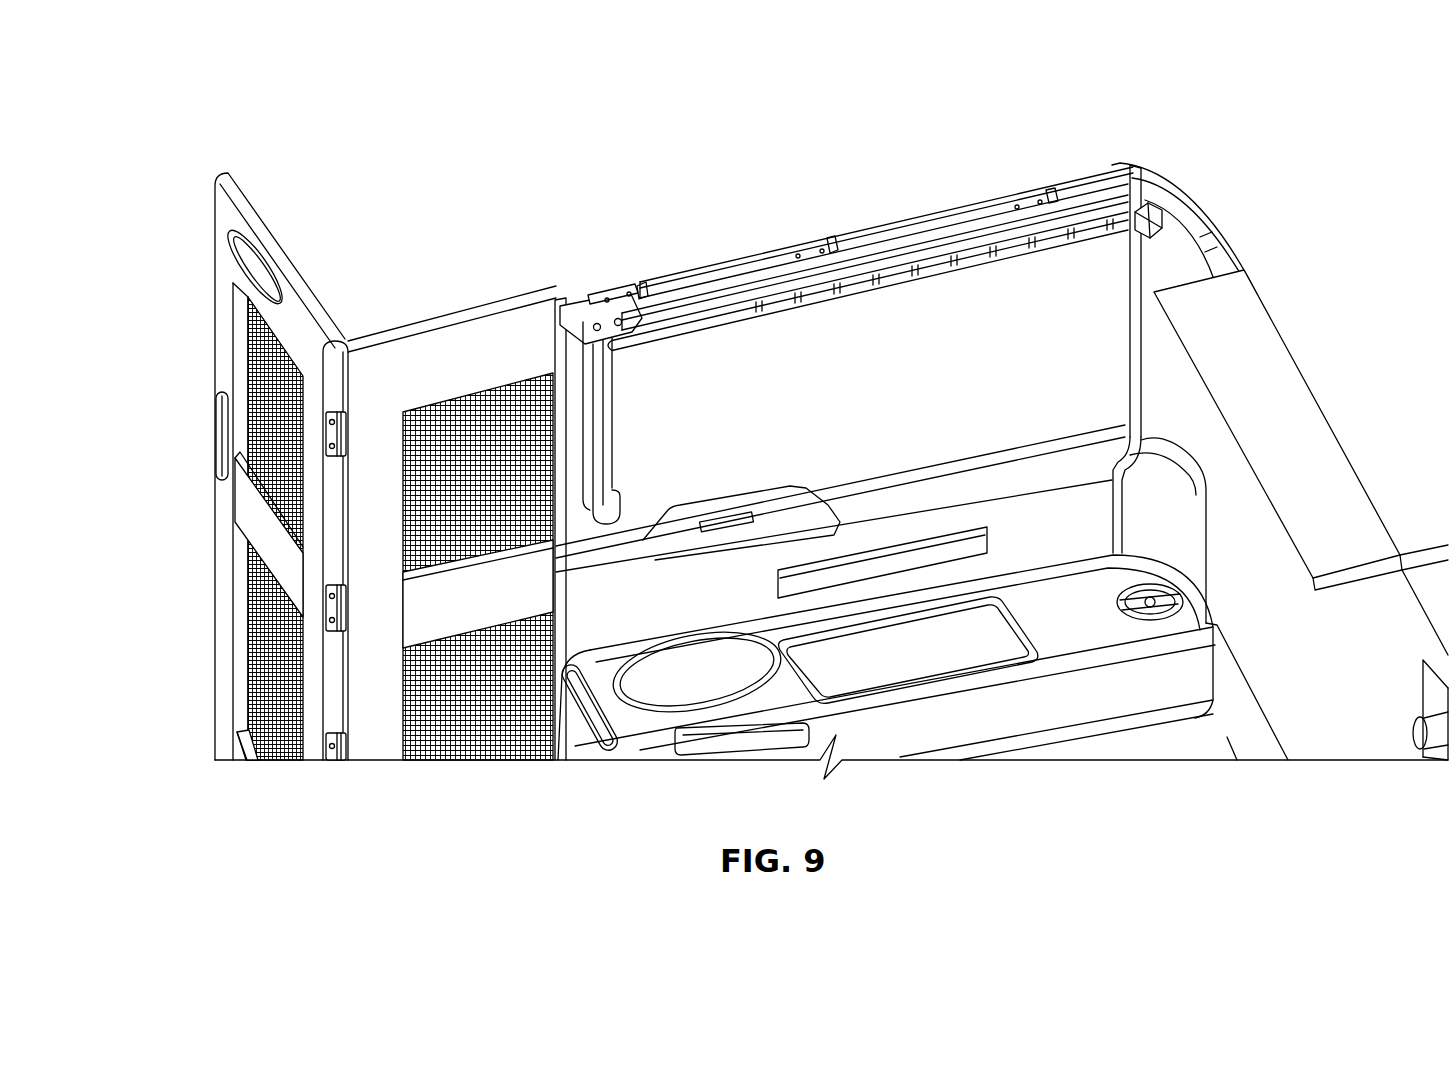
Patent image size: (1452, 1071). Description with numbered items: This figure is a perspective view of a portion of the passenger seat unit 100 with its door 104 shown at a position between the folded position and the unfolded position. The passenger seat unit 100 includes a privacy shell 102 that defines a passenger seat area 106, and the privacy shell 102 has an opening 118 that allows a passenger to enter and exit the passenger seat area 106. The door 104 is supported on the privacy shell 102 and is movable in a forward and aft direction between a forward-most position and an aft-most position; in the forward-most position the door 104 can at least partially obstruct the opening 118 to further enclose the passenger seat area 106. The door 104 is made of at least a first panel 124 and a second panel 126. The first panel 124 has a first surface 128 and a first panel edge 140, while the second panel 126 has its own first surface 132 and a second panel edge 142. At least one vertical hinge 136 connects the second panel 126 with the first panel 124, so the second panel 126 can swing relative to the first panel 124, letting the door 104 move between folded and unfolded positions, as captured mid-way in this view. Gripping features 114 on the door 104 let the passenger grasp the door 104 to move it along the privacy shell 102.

The passenger seat unit 100 is at (1207, 84).
The privacy shell 102 is at (833, 240).
The door 104 is at (372, 747).
The passenger seat area 106 is at (968, 330).
The gripping features 114 is at (215, 447).
The opening 118 is at (175, 206).
The first panel 124 is at (470, 750).
The second panel 126 is at (222, 202).
The first surface 128 is at (448, 342).
The first surface 132 is at (240, 735).
The vertical hinge 136 is at (337, 410).
The first panel edge 140 is at (606, 297).
The second panel edge 142 is at (215, 312).